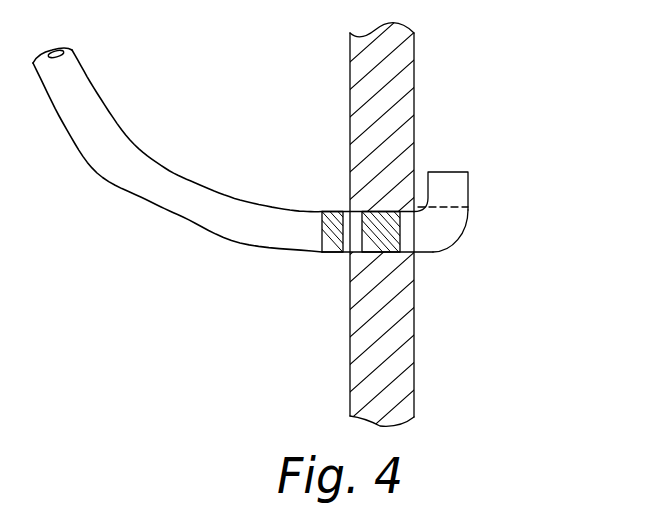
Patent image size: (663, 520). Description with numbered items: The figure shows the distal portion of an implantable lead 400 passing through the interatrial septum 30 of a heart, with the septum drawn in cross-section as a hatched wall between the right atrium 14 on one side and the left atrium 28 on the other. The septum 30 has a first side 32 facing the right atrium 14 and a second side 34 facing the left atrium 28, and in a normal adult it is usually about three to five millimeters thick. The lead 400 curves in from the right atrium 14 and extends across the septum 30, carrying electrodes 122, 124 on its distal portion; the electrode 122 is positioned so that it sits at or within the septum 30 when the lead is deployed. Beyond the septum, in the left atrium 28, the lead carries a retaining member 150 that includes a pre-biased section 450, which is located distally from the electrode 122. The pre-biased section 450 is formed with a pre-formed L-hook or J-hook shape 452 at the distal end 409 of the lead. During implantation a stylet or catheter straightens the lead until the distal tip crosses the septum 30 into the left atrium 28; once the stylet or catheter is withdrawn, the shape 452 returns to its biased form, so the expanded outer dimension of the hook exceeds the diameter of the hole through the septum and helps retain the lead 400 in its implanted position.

The right atrium 14 is at (215, 102).
The left atrium 28 is at (556, 102).
The interatrial septum 30 is at (380, 228).
The first side 32 is at (350, 128).
The second side 34 is at (415, 120).
The electrode 122 is at (385, 253).
The electrode 124 is at (332, 254).
The retaining member 150 is at (479, 224).
The lead 400 is at (111, 170).
The distal end 409 is at (433, 252).
The pre-biased section 450 is at (468, 207).
The pre-formed L-hook or J-hook shape 452 is at (460, 241).